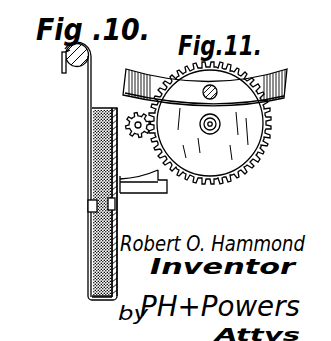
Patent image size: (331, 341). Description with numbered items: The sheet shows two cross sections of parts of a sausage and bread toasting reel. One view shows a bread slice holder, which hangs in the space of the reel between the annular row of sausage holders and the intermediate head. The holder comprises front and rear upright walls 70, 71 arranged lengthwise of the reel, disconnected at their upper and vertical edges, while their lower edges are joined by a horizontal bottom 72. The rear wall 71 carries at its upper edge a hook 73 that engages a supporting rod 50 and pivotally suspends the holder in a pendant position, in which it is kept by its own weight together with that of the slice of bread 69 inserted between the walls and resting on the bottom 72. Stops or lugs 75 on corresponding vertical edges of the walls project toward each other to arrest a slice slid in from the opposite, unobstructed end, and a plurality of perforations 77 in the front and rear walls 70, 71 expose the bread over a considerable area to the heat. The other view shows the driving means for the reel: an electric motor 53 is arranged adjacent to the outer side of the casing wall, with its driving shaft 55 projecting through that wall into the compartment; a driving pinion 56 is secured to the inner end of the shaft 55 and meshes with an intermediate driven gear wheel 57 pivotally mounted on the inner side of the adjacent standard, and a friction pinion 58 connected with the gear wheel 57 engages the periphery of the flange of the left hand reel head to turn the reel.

In FIG. 11, the supporting rod 50 is at (217, 88).
In FIG. 11, the electric motor 53 is at (164, 183).
In FIG. 11, the driving shaft 55 is at (148, 138).
In FIG. 10, the driving pinion 56 is at (64, 57).
In FIG. 11, the driving pinion 56 is at (184, 72).
In FIG. 11, the intermediate driven gear wheel 57 is at (258, 164).
In FIG. 11, the friction pinion 58 is at (220, 125).
In FIG. 10, the slice of bread 69 is at (96, 276).
In FIG. 10, the front upright wall 70 is at (116, 223).
In FIG. 10, the rear upright wall 71 is at (91, 242).
In FIG. 10, the horizontal bottom 72 is at (99, 302).
In FIG. 10, the hook 73 is at (62, 68).
In FIG. 10, the stop lug 75 is at (108, 206).
In FIG. 10, the perforations 77 is at (112, 146).